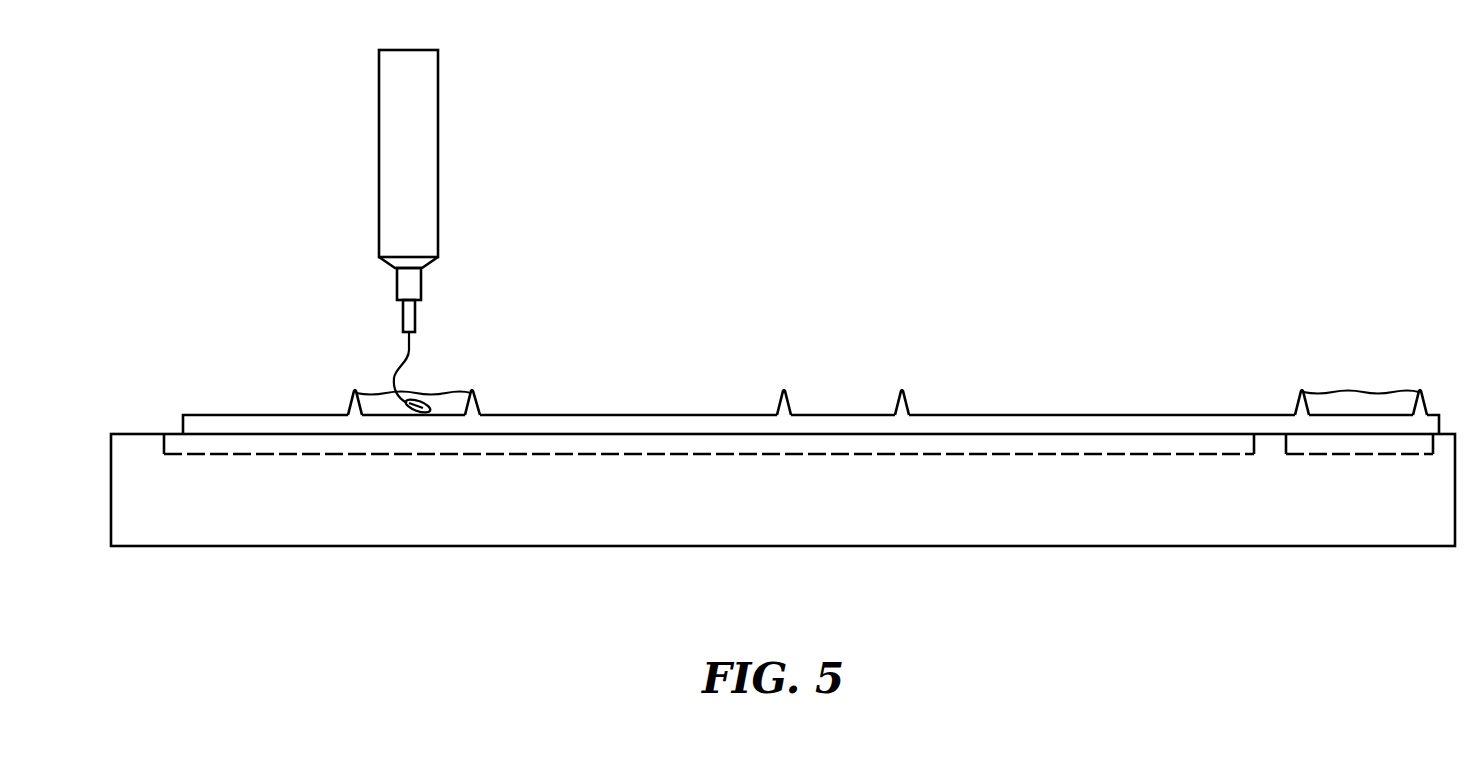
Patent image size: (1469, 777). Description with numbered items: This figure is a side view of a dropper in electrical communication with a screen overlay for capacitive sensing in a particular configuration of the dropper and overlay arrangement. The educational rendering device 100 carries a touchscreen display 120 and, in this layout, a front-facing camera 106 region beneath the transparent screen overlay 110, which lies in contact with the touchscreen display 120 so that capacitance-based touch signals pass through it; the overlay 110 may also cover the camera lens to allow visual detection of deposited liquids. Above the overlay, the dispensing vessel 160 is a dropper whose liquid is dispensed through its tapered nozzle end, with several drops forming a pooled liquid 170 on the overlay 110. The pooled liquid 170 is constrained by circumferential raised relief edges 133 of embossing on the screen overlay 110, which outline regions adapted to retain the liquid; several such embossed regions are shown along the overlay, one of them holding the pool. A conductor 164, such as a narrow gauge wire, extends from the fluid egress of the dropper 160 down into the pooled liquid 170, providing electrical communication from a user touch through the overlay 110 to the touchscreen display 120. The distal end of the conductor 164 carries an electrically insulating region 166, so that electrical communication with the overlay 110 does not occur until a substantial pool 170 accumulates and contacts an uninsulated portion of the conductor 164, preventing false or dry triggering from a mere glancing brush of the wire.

The educational rendering device 100 is at (210, 546).
The front-facing camera 106 is at (1360, 454).
The screen overlay 110 is at (183, 415).
The touchscreen display 120 is at (393, 455).
The raised relief edges 133 is at (350, 408).
The dispensing vessel 160 is at (439, 103).
The conductor 164 is at (405, 352).
The electrically insulating region 166 is at (428, 400).
The pooled liquid 170 is at (452, 392).